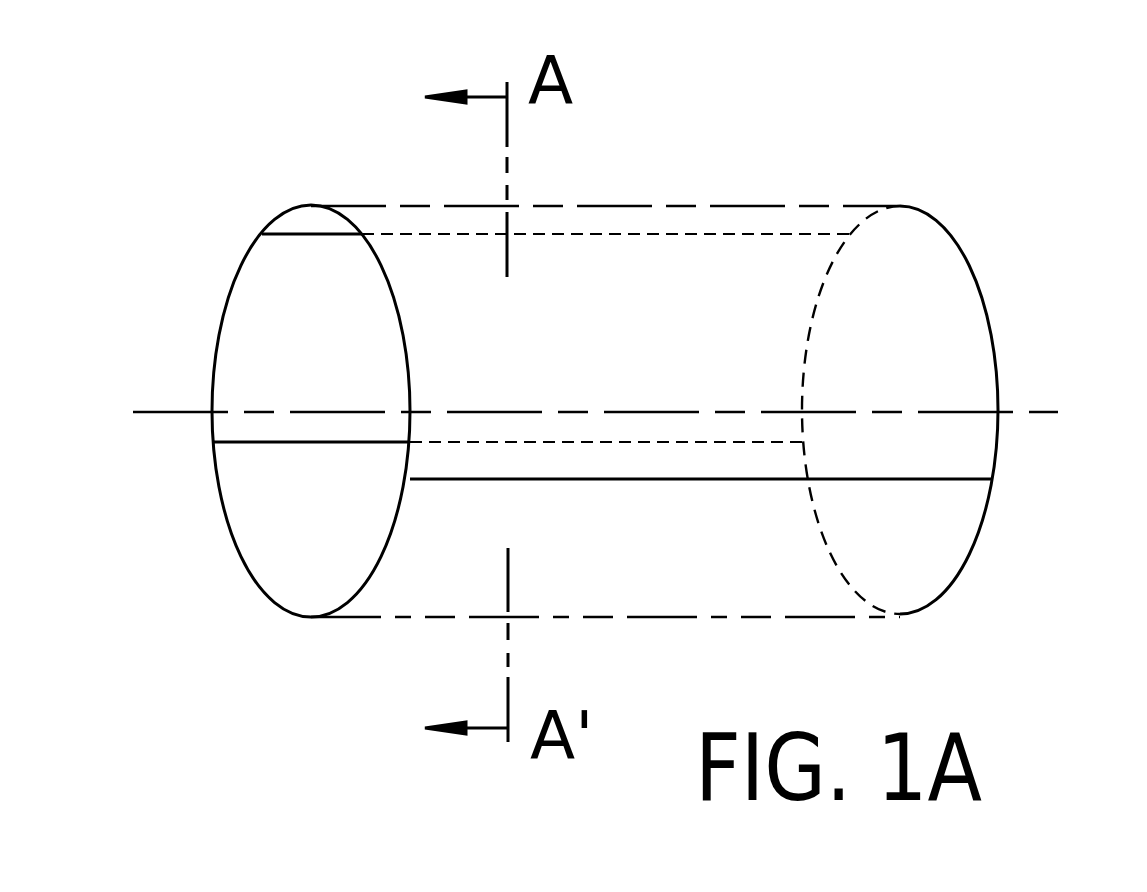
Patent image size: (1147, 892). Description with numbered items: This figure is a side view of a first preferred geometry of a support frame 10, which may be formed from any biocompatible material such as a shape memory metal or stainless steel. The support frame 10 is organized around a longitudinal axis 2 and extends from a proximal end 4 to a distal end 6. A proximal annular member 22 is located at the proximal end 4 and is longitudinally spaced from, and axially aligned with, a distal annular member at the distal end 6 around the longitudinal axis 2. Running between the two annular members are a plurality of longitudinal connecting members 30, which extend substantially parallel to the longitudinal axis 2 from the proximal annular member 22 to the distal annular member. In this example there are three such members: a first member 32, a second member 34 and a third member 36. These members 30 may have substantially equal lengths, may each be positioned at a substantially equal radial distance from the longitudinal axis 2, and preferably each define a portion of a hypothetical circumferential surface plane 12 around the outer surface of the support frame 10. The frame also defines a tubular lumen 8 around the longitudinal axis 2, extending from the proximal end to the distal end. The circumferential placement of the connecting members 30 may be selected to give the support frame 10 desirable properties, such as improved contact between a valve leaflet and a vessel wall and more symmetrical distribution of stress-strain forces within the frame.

The longitudinal axis 2 is at (1027, 412).
The proximal end 4 is at (970, 267).
The distal end 6 is at (243, 255).
The tubular lumen 8 is at (295, 480).
The support frame 10 is at (208, 653).
The hypothetical circumferential surface plane 12 is at (420, 618).
The proximal annular member 22 is at (922, 210).
The longitudinal connecting members 30 is at (858, 80).
The first member 32 is at (660, 442).
The second member 34 is at (563, 479).
The third member 36 is at (812, 234).